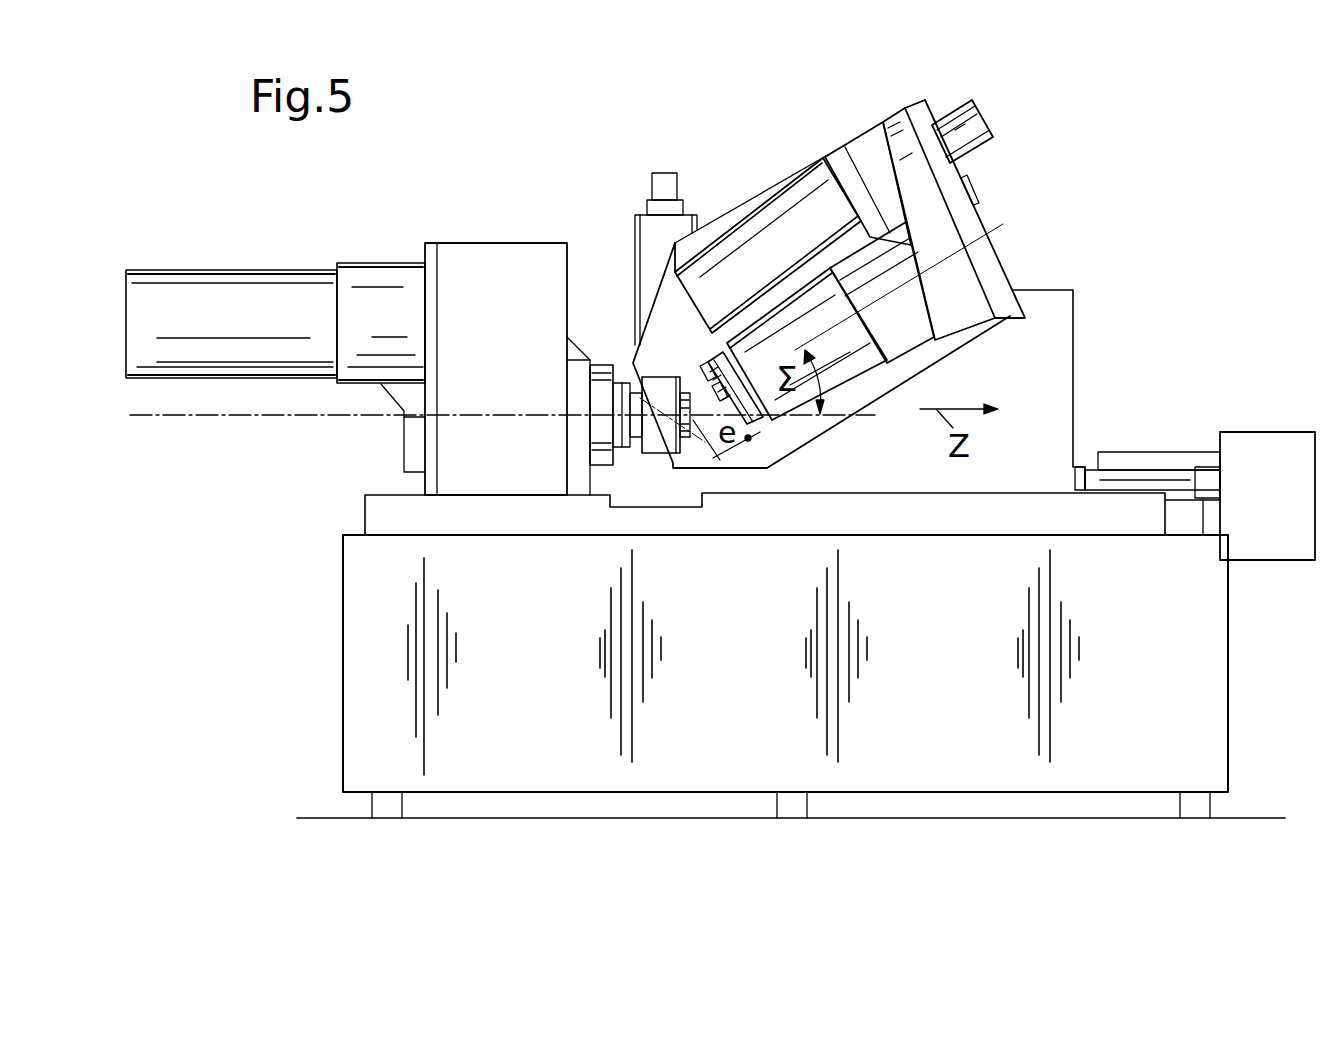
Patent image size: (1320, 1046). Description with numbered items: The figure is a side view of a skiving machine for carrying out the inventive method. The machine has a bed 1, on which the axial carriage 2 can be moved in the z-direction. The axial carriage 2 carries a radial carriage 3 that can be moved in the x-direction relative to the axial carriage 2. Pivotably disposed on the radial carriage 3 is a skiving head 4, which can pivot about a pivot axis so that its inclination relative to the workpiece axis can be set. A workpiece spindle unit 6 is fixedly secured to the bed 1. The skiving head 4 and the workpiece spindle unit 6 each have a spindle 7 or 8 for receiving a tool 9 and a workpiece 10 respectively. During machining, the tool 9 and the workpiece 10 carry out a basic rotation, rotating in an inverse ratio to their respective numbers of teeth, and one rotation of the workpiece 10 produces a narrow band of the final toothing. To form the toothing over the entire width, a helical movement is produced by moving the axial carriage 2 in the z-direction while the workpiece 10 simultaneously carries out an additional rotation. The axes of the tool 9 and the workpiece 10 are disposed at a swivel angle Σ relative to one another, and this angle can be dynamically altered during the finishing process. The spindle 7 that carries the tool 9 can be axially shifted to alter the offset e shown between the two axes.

The bed 1 is at (473, 737).
The axial carriage 2 is at (1052, 350).
The radial carriage 3 is at (638, 217).
The skiving head 4 is at (752, 208).
The workpiece spindle unit 6 is at (478, 265).
The spindle 7 is at (756, 392).
The spindle 8 is at (620, 373).
The tool 9 is at (752, 392).
The workpiece 10 is at (668, 415).